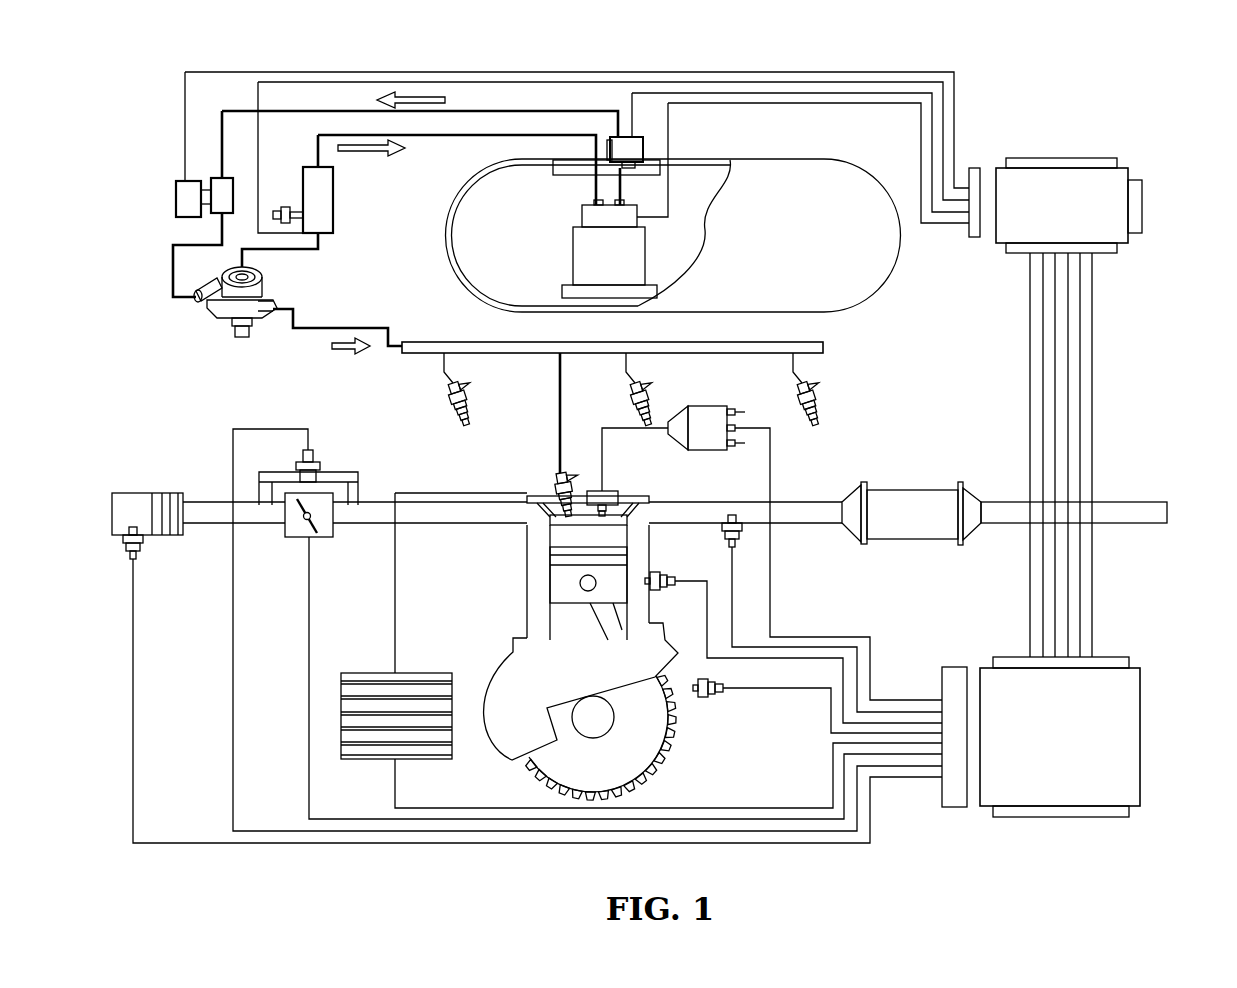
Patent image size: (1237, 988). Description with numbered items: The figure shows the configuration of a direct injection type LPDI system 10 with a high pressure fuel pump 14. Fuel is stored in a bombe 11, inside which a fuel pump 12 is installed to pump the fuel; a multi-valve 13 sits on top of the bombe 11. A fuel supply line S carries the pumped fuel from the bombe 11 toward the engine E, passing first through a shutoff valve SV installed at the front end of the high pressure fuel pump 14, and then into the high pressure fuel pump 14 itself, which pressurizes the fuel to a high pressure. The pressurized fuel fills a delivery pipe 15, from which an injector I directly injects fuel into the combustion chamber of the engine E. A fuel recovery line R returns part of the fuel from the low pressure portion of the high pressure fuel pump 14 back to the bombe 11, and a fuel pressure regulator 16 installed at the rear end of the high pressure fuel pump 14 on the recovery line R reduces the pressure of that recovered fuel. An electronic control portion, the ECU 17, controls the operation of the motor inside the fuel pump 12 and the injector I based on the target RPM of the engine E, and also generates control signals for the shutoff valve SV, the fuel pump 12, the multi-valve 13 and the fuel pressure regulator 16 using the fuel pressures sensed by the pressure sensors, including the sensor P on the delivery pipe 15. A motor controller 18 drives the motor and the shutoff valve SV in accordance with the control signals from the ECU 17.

The direct injection type LPDI system 10 is at (1119, 39).
The bombe 11 is at (810, 163).
The fuel pump 12 is at (576, 254).
The multi-valve 13 is at (624, 137).
The high pressure fuel pump 14 is at (223, 318).
The delivery pipe 15 is at (430, 342).
The fuel pressure regulator 16 is at (325, 208).
The electronic control portion (ECU) 17 is at (1140, 745).
The motor controller 18 is at (1142, 207).
The fuel supply line S is at (309, 111).
The fuel recovery line R is at (483, 135).
The shutoff valve SV is at (176, 203).
The engine E is at (527, 580).
The injector I is at (555, 480).
The pressure sensor P is at (606, 486).